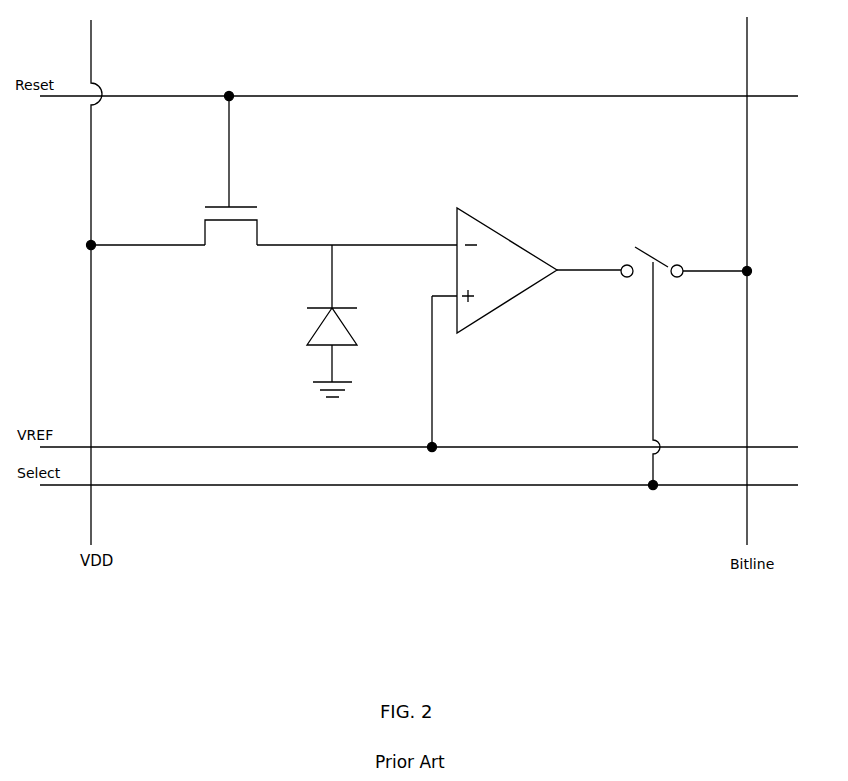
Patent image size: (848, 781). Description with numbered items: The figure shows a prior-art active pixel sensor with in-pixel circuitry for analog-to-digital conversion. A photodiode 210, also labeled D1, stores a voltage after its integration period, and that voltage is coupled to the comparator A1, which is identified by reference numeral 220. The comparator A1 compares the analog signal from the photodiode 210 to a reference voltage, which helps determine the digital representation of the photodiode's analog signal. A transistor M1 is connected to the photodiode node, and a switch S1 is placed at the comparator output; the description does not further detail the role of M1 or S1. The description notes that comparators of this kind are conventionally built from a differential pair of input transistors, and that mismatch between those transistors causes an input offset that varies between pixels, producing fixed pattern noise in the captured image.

The photodiode 210 is at (288, 321).
The amplifier A1 220 is at (525, 322).
The reset transistor M1 is at (231, 170).
The photodiode D1 is at (277, 373).
The comparator A1 is at (528, 210).
The select switch S1 is at (652, 360).